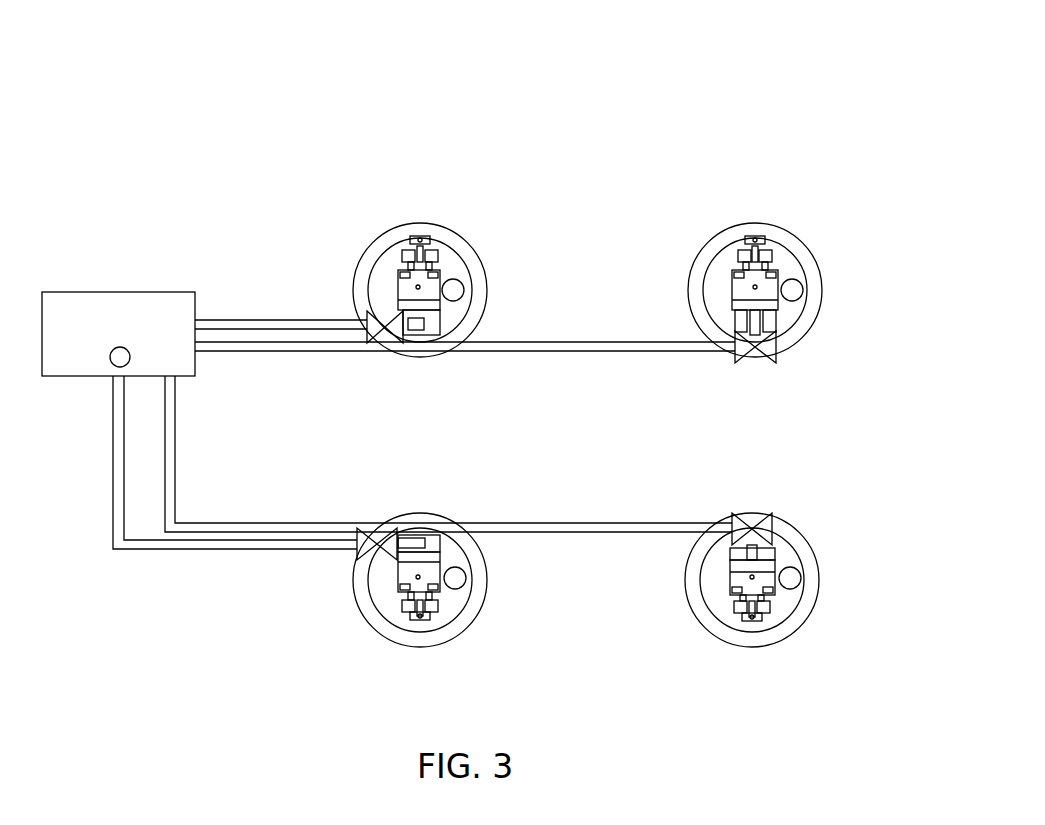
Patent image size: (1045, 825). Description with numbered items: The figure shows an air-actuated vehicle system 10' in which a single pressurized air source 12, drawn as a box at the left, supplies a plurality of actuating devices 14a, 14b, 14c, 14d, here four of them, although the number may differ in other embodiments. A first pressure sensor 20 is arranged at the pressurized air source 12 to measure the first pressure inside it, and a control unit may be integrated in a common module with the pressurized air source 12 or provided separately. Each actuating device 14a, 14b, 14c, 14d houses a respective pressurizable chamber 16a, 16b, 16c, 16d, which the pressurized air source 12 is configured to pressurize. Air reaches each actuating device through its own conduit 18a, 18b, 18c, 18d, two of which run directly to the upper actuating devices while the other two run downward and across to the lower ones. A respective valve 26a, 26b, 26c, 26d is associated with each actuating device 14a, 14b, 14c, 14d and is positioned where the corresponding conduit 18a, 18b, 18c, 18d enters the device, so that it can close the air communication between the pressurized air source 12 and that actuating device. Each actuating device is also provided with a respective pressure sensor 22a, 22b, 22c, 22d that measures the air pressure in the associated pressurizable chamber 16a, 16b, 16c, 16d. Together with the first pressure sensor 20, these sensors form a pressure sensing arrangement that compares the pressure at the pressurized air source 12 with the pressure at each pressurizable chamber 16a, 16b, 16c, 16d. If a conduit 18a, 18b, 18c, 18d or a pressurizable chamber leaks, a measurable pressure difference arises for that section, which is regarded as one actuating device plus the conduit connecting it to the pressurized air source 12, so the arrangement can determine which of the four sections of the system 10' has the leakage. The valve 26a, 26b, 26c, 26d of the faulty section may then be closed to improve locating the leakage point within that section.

The air-actuated vehicle system 10' is at (748, 53).
The pressurized air source 12 is at (113, 292).
The actuating device 14a is at (420, 222).
The actuating device 14b is at (752, 222).
The actuating device 14c is at (405, 647).
The actuating device 14d is at (745, 647).
The pressurizable chamber 16a is at (392, 268).
The pressurizable chamber 16b is at (732, 270).
The pressurizable chamber 16c is at (440, 548).
The pressurizable chamber 16d is at (778, 556).
The conduit 18a is at (245, 319).
The conduit 18b is at (632, 342).
The conduit 18c is at (262, 550).
The conduit 18d is at (178, 422).
The first pressure sensor 20 is at (113, 366).
The pressure sensor 22a is at (465, 289).
The pressure sensor 22b is at (805, 289).
The pressure sensor 22c is at (467, 578).
The pressure sensor 22d is at (802, 578).
The valve 26a is at (372, 345).
The valve 26b is at (766, 363).
The valve 26c is at (364, 530).
The valve 26d is at (748, 513).